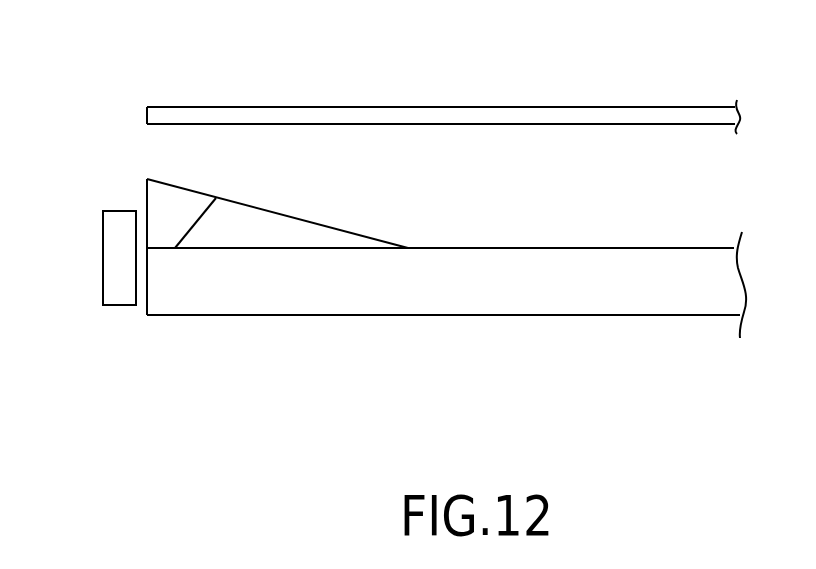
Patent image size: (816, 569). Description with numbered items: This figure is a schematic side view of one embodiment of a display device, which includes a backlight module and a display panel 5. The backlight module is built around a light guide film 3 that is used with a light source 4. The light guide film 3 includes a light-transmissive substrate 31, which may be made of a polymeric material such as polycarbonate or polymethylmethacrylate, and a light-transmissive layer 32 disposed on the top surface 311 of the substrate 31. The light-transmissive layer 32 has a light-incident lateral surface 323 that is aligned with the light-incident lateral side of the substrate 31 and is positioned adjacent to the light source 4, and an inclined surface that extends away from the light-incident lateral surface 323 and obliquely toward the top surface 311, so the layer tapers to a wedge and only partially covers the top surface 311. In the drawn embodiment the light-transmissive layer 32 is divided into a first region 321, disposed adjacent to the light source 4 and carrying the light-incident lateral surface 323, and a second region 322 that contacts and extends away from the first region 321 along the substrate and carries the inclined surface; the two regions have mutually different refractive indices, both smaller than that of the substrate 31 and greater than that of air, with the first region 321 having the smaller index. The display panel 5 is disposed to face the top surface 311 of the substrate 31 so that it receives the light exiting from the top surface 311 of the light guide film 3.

The light guide film 3 is at (464, 261).
The light-transmissive substrate 31 is at (582, 290).
The top surface 311 is at (583, 247).
The light-transmissive layer 32 is at (235, 226).
The first region 321 is at (164, 240).
The second region 322 is at (278, 248).
The light-incident lateral surface 323 is at (147, 203).
The light source 4 is at (112, 245).
The display panel 5 is at (517, 107).